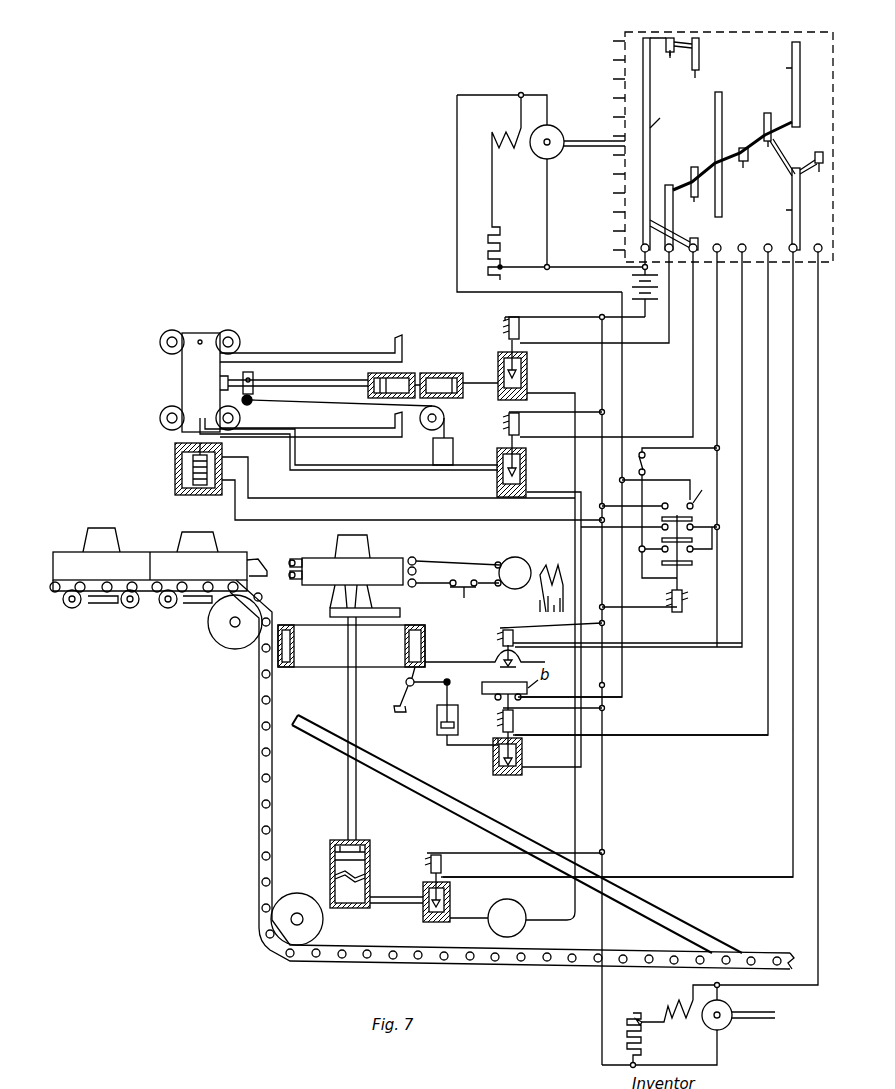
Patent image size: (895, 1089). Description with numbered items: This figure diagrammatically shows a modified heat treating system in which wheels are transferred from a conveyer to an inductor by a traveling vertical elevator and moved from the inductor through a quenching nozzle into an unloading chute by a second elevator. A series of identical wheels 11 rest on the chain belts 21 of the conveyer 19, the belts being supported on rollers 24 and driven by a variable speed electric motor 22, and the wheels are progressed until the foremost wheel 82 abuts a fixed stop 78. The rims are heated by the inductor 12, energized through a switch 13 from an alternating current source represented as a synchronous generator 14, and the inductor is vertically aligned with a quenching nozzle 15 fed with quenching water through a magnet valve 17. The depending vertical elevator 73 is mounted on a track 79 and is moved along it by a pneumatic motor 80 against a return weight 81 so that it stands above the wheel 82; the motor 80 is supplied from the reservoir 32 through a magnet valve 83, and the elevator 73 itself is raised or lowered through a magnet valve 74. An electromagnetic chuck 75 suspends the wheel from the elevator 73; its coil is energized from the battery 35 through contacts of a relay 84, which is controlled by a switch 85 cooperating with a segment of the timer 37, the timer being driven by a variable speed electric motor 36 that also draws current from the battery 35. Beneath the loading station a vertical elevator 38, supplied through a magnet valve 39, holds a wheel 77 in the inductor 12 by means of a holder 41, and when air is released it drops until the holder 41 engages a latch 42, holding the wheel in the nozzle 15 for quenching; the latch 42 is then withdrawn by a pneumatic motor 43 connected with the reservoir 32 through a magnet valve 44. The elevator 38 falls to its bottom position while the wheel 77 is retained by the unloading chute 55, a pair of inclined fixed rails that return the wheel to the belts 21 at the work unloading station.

The wheels 11 is at (118, 543).
The inductor 12 is at (418, 552).
The switch 13 is at (462, 596).
The synchronous generator 14 is at (520, 554).
The quenching nozzle 15 is at (426, 640).
The magnet valve 17 is at (500, 658).
The conveyer 19 is at (208, 648).
The chain belts 21 is at (258, 686).
The variable speed electric motor 22 is at (728, 1022).
The rollers 24 is at (74, 608).
The reservoir 32 is at (518, 904).
The battery 35 is at (632, 284).
The variable speed electric motor 36 is at (540, 158).
The timer 37 is at (628, 36).
The vertical elevator 38 is at (370, 862).
The magnet valve 39 is at (422, 896).
The holder 41 is at (378, 596).
The latch 42 is at (400, 708).
The pneumatic motor 43 is at (437, 730).
The magnet valve 44 is at (510, 776).
The unloading chute 55 is at (520, 836).
The depending vertical elevator 73 is at (182, 380).
The magnet valve 74 is at (527, 480).
The electromagnetic chuck 75 is at (176, 473).
The wheel 77 is at (338, 548).
The fixed stop 78 is at (252, 560).
The track 79 is at (160, 345).
The pneumatic motor 80 is at (438, 374).
The return weight 81 is at (433, 450).
The wheel 82 is at (182, 542).
The magnet valve 83 is at (527, 372).
The relay 84 is at (682, 612).
The switch 85 is at (647, 466).